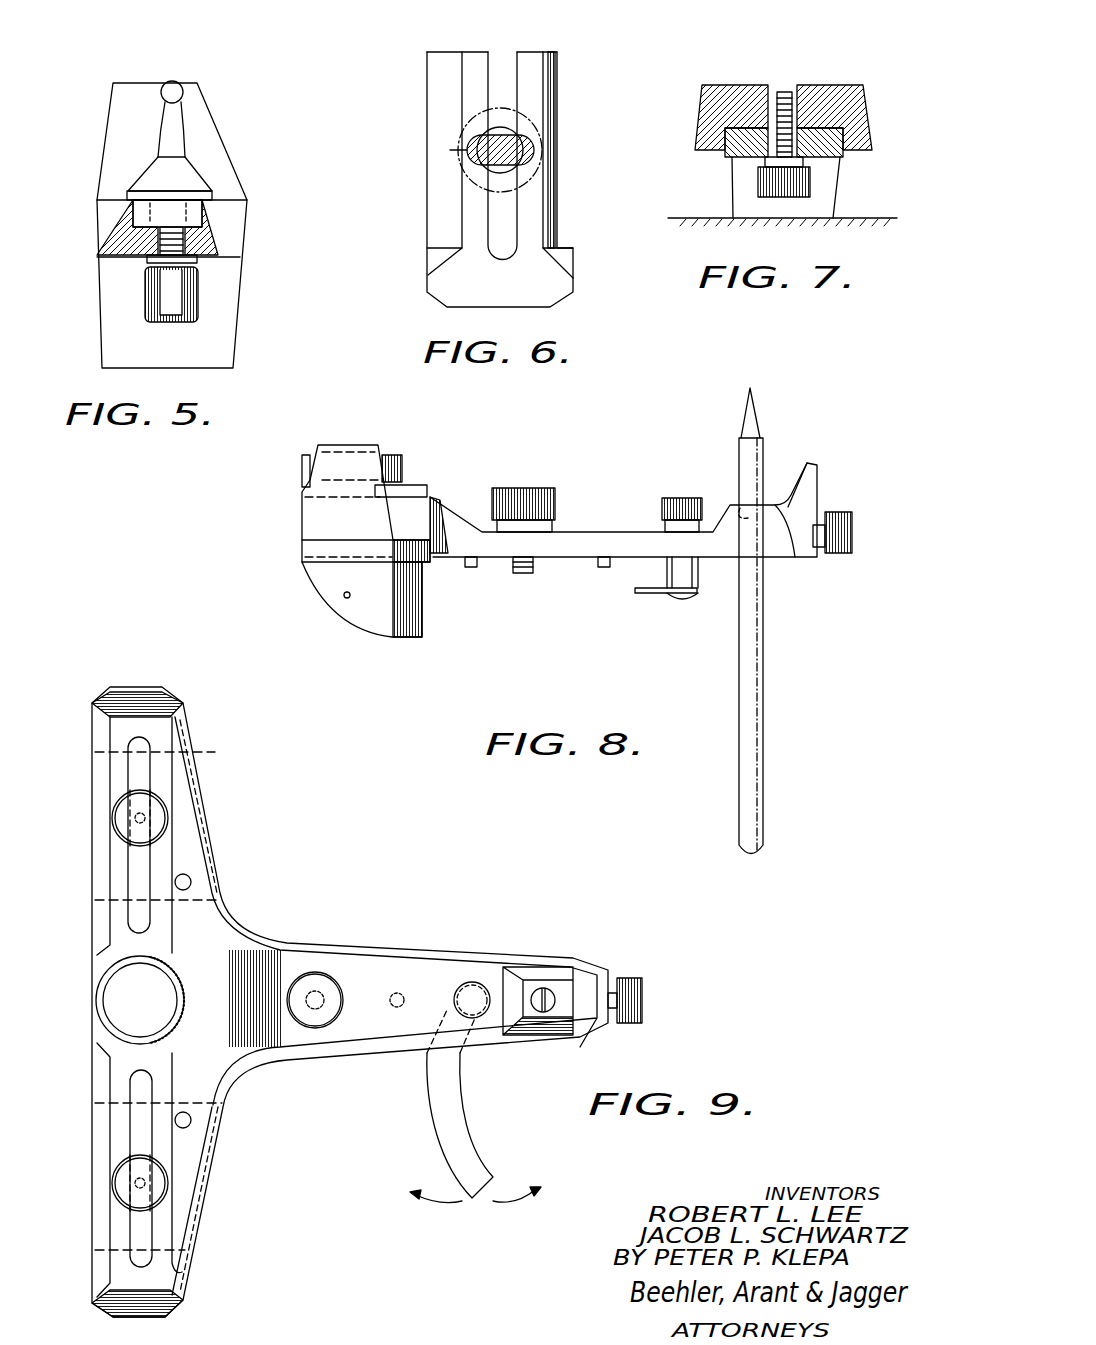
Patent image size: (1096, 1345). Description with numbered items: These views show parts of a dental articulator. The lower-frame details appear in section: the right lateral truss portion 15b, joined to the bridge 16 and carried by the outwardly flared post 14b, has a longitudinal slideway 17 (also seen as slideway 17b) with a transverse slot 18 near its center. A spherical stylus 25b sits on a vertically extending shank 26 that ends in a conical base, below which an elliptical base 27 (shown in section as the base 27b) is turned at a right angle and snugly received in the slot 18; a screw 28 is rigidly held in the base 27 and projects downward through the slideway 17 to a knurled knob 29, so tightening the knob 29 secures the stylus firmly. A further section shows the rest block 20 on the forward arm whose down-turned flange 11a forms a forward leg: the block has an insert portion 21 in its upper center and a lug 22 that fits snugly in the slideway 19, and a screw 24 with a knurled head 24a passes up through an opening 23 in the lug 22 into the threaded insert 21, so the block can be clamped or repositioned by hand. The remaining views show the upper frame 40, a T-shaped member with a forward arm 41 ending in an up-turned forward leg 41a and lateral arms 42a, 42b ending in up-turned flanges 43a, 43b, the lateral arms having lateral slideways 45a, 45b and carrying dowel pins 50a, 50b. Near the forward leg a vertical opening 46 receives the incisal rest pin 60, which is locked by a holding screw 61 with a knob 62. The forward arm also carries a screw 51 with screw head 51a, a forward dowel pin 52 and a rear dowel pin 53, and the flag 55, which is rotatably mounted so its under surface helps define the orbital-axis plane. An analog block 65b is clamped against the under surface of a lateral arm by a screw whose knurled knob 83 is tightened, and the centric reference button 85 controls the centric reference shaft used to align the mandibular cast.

In FIG. 7, the down-turned flange 11a is at (817, 210).
In FIG. 6, the post 14b is at (575, 290).
In FIG. 5, the right lateral truss portion 15b is at (130, 257).
In FIG. 5, the bridge 16 is at (197, 91).
In FIG. 5, the slideway 17 is at (203, 193).
In FIG. 6, the longitudinal slideway 17b is at (510, 82).
In FIG. 5, the transverse slot 18 is at (165, 205).
In FIG. 6, the transverse slot 18 is at (532, 160).
In FIG. 7, the slideway 19 is at (770, 142).
In FIG. 7, the rest block 20 is at (712, 90).
In FIG. 7, the insert portion 21 is at (773, 90).
In FIG. 7, the lug 22 is at (745, 150).
In FIG. 7, the opening 23 is at (812, 142).
In FIG. 7, the screw 24 is at (838, 92).
In FIG. 7, the knurled head 24a is at (752, 188).
In FIG. 5, the spherical stylus 25b is at (172, 80).
In FIG. 5, the shank 26 is at (188, 178).
In FIG. 5, the elliptical base 27 is at (197, 212).
In FIG. 6, the aperture 27b is at (520, 140).
In FIG. 5, the screw 28 is at (145, 302).
In FIG. 5, the knurled knob 29 is at (193, 302).
In FIG. 8, the upper frame 40 is at (568, 564).
In FIG. 9, the upper frame 40 is at (338, 1113).
In FIG. 8, the forward arm 41 is at (590, 530).
In FIG. 9, the forward arm 41 is at (380, 956).
In FIG. 8, the forward leg 41a is at (810, 465).
In FIG. 9, the forward leg 41a is at (588, 970).
In FIG. 9, the lateral arm 42a is at (177, 765).
In FIG. 9, the lateral arm 42b is at (167, 1278).
In FIG. 9, the up-turned flange 43a is at (125, 687).
In FIG. 8, the up-turned flange 43b is at (345, 447).
In FIG. 9, the up-turned flange 43b is at (160, 1295).
In FIG. 9, the lateral slideway 45a is at (132, 923).
In FIG. 9, the lateral slideway 45b is at (133, 1082).
In FIG. 8, the vertical opening 46 is at (748, 512).
In FIG. 9, the dowel pin 50a is at (190, 880).
In FIG. 9, the dowel pin 50b is at (191, 1120).
In FIG. 8, the screw 51 is at (523, 575).
In FIG. 8, the screw head 51a is at (520, 488).
In FIG. 9, the screw head 51a is at (313, 1021).
In FIG. 8, the forward dowel pin 52 is at (602, 567).
In FIG. 8, the rear dowel pin 53 is at (470, 567).
In FIG. 8, the flag 55 is at (648, 593).
In FIG. 9, the flag 55 is at (440, 1147).
In FIG. 8, the incisal rest pin 60 is at (765, 745).
In FIG. 9, the incisal rest pin 60 is at (538, 996).
In FIG. 8, the holding screw 61 is at (820, 548).
In FIG. 8, the knob 62 is at (845, 540).
In FIG. 9, the knob 62 is at (645, 990).
In FIG. 8, the analog block 65b is at (340, 600).
In FIG. 9, the knurled knob 83 is at (128, 1193).
In FIG. 8, the centric reference button 85 is at (302, 470).
In FIG. 9, the centric reference button 85 is at (118, 1000).